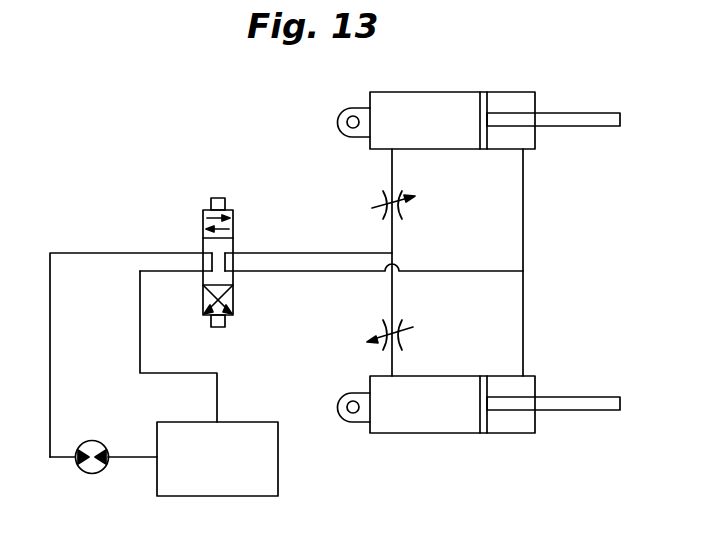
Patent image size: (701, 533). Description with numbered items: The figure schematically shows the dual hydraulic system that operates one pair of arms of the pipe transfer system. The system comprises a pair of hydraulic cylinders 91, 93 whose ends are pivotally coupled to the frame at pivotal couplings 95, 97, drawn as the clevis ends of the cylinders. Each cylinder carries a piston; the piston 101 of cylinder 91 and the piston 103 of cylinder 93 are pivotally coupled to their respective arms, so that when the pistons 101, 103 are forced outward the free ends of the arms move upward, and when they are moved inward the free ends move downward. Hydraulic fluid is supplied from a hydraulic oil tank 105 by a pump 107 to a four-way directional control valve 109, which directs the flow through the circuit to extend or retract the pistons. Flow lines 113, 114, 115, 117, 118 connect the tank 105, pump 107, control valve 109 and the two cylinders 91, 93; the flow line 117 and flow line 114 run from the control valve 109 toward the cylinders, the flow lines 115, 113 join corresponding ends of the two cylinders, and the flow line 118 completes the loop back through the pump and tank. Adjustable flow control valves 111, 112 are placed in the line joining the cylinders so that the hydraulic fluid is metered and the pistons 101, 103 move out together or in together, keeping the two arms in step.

The cylinder 91 is at (437, 92).
The cylinder 93 is at (447, 433).
The pivotal coupling 95 is at (347, 127).
The pivotal coupling 97 is at (350, 414).
The piston 101 is at (580, 113).
The piston 103 is at (575, 397).
The hydraulic oil tank 105 is at (278, 478).
The pump 107 is at (95, 475).
The 4-way directional control valve 109 is at (203, 228).
The adjustable flow control valve 111 is at (357, 210).
The adjustable flow control valve 112 is at (362, 348).
The flow line 113 is at (523, 188).
The flow line 114 is at (293, 272).
The flow line 115 is at (392, 165).
The flow line 117 is at (307, 253).
The flow line 118 is at (140, 330).